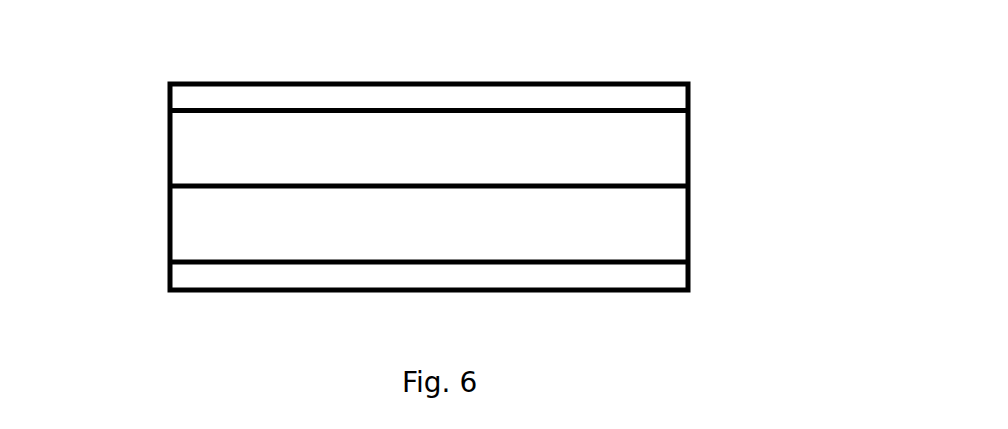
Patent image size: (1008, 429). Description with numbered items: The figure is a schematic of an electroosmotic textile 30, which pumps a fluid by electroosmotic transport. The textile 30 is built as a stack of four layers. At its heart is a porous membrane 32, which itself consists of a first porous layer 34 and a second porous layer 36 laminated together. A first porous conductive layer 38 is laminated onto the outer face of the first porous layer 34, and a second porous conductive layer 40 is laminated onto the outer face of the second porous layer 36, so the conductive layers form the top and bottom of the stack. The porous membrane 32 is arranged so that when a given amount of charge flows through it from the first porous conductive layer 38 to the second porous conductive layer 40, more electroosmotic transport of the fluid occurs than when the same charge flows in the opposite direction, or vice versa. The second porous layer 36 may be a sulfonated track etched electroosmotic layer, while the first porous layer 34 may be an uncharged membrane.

The electroosmotic textile 30 is at (755, 71).
The porous membrane 32 is at (697, 108).
The first porous layer 34 is at (177, 152).
The second porous layer 36 is at (185, 225).
The first porous conductive layer 38 is at (433, 82).
The second porous conductive layer 40 is at (413, 293).